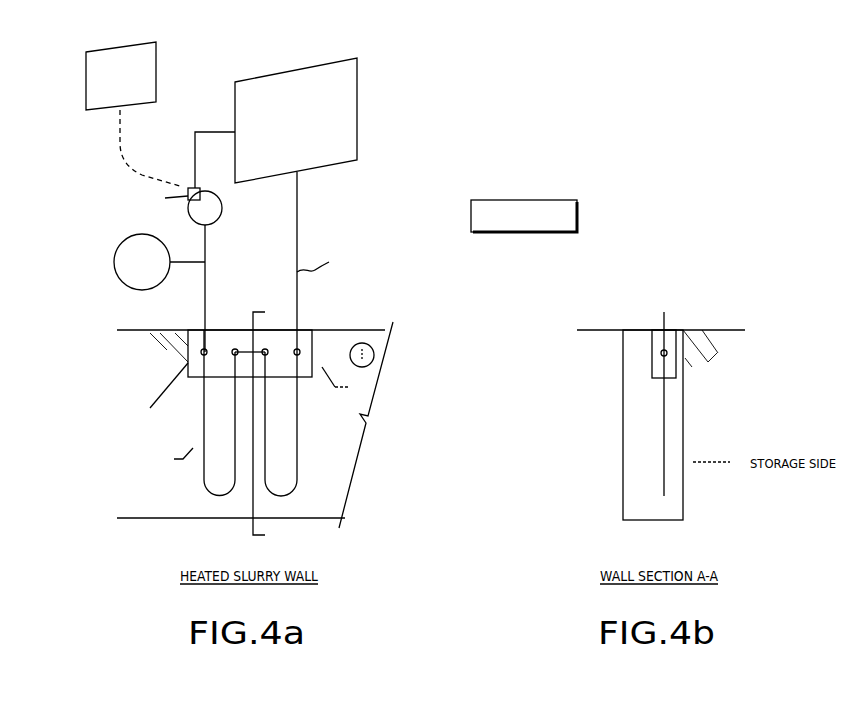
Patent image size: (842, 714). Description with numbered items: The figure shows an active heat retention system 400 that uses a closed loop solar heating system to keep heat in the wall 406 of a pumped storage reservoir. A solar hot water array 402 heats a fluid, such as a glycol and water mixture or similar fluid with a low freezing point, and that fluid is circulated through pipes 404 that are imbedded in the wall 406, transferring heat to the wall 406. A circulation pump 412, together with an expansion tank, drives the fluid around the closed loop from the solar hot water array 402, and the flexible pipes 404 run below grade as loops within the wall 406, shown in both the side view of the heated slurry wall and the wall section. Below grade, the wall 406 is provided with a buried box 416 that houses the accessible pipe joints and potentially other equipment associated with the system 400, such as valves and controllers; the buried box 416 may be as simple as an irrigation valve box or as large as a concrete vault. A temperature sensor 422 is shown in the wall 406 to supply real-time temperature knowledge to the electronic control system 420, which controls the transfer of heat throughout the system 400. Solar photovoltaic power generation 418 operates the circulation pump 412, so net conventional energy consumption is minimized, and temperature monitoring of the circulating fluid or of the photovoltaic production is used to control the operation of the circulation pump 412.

The active heat retention system 400 is at (447, 128).
The solar hot water array 402 is at (357, 96).
The pipes 404 is at (297, 223).
The wall 406 is at (346, 443).
The circulation pump 412 is at (221, 200).
The buried box 416 is at (418, 420).
The solar photovoltaic power generation 418 is at (156, 70).
The electronic control system 420 is at (526, 200).
The temperature sensor 422 is at (374, 348).